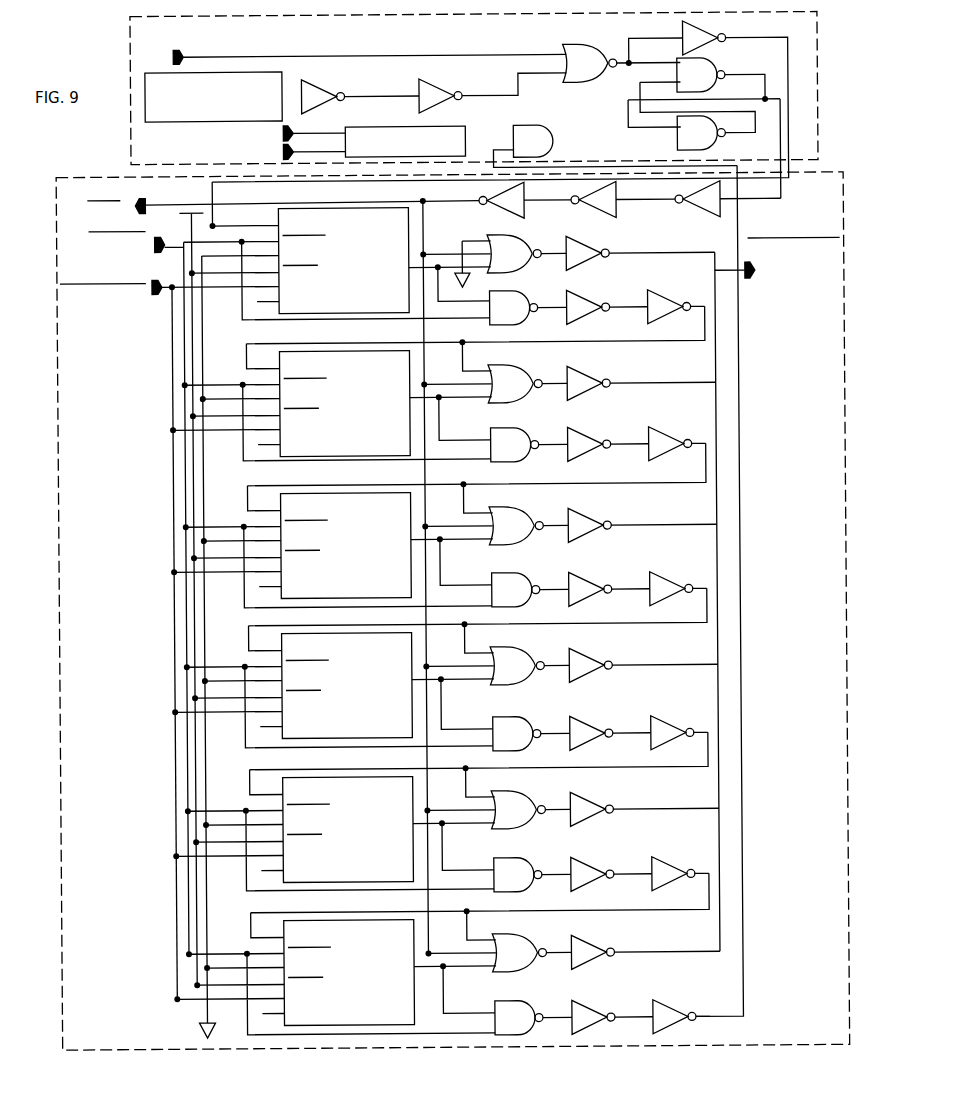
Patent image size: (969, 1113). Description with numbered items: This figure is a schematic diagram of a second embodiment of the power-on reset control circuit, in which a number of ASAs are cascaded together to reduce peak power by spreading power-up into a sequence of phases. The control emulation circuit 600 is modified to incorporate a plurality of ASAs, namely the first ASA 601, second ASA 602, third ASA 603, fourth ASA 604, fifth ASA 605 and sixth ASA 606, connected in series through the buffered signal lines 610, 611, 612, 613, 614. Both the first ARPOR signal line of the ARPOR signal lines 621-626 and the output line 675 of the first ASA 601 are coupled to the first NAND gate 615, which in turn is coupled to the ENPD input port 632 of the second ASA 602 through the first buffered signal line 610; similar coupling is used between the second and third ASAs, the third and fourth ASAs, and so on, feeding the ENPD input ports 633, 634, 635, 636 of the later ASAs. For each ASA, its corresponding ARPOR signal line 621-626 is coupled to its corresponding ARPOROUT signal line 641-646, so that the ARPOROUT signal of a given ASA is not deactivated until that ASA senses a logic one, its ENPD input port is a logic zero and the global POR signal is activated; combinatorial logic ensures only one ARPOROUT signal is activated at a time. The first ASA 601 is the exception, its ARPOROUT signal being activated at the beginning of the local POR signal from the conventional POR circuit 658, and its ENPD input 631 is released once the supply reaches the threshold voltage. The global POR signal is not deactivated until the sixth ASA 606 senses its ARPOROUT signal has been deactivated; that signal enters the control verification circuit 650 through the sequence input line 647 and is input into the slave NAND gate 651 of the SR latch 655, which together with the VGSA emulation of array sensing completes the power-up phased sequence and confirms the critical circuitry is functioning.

The control emulation circuit 600 is at (120, 489).
The control verification circuit 650 is at (380, 40).
The conventional POR circuit 658 is at (286, 72).
The SR latch 655 is at (642, 72).
The slave NAND gate 651 is at (547, 150).
The first ASA 601 is at (405, 233).
The second ASA 602 is at (405, 376).
The third ASA 603 is at (405, 518).
The fourth ASA 604 is at (405, 658).
The fifth ASA 605 is at (405, 802).
The sixth ASA 606 is at (405, 945).
The first NAND gate 615 is at (519, 316).
The first buffered signal line 610 is at (562, 342).
The buffered signal line 611 is at (569, 484).
The buffered signal line 612 is at (569, 624).
The buffered signal line 613 is at (569, 768).
The buffered signal line 614 is at (569, 911).
The ARPOR signal lines 621-626 is at (170, 250).
The ENPD input of the first ASA 631 is at (228, 224).
The ENPD input port of the second ASA 632 is at (268, 367).
The ENPD input port of the third ASA 633 is at (268, 509).
The ENPD input port of the fourth ASA 634 is at (268, 649).
The ENPD input port of the fifth ASA 635 is at (268, 793).
The ENPD input port of the sixth ASA 636 is at (268, 936).
The ARPOROUT signal lines 641-646 is at (752, 282).
The sequence input line 647 is at (740, 690).
The output line of the first ASA 675 is at (413, 272).